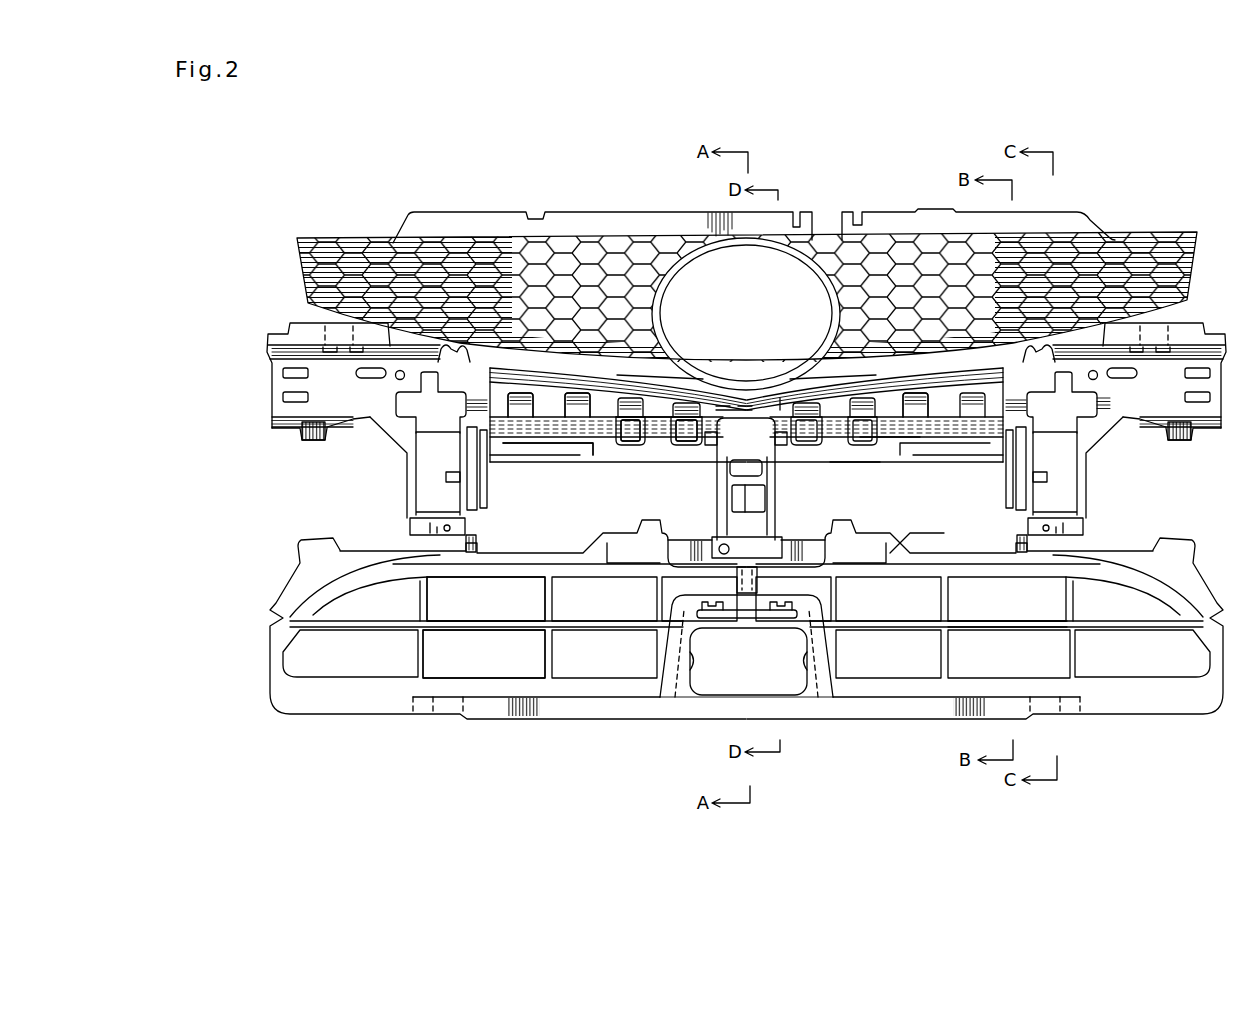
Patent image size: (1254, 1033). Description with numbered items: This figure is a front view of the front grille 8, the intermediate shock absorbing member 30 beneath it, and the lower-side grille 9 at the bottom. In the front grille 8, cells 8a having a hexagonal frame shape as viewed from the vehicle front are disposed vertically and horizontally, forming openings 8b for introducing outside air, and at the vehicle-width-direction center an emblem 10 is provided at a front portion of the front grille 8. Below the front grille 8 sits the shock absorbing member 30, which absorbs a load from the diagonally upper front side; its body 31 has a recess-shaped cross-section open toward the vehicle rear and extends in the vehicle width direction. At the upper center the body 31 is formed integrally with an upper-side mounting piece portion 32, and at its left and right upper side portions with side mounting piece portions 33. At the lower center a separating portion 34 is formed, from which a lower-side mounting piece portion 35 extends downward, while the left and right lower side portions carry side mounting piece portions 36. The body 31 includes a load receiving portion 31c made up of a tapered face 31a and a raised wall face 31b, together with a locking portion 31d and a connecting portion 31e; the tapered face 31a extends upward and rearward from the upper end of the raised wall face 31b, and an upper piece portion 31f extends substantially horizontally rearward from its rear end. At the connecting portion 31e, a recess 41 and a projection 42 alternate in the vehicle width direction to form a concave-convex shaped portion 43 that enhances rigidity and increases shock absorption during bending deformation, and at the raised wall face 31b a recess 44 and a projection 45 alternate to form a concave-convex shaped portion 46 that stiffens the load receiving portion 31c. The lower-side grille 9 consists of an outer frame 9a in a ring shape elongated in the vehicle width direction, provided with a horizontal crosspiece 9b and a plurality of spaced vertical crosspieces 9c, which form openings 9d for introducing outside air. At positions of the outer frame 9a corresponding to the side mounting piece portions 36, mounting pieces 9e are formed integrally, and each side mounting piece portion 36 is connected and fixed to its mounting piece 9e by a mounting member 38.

The front grille 8 is at (889, 201).
The cell 8a is at (577, 278).
The opening 8b is at (556, 265).
The emblem 10 is at (744, 275).
The intermediate shock absorbing member 30 is at (268, 397).
The body 31 is at (594, 474).
The tapered face 31a is at (724, 402).
The raised wall face 31b is at (748, 402).
The load receiving portion 31c is at (775, 336).
The locking portion 31d is at (852, 456).
The connecting portion 31e is at (884, 432).
The upper piece portion 31f is at (941, 372).
The upper-side mounting piece portion 32 is at (789, 395).
The side mounting piece portion 33 is at (395, 345).
The separating portion 34 is at (710, 440).
The lower-side mounting piece portion 35 is at (776, 513).
The side mounting piece portion 36 is at (405, 490).
The mounting member 38 is at (449, 533).
The recess 41 is at (657, 435).
The projection 42 is at (632, 440).
The concave-convex shaped portion 43 is at (665, 497).
The recess 44 is at (578, 405).
The projection 45 is at (548, 407).
The concave-convex shaped portion 46 is at (563, 497).
The lower-side grille 9 is at (937, 544).
The outer frame 9a is at (907, 563).
The horizontal crosspiece 9b is at (978, 620).
The vertical crosspiece 9c is at (425, 663).
The opening 9d is at (481, 612).
The mounting piece 9e is at (408, 530).